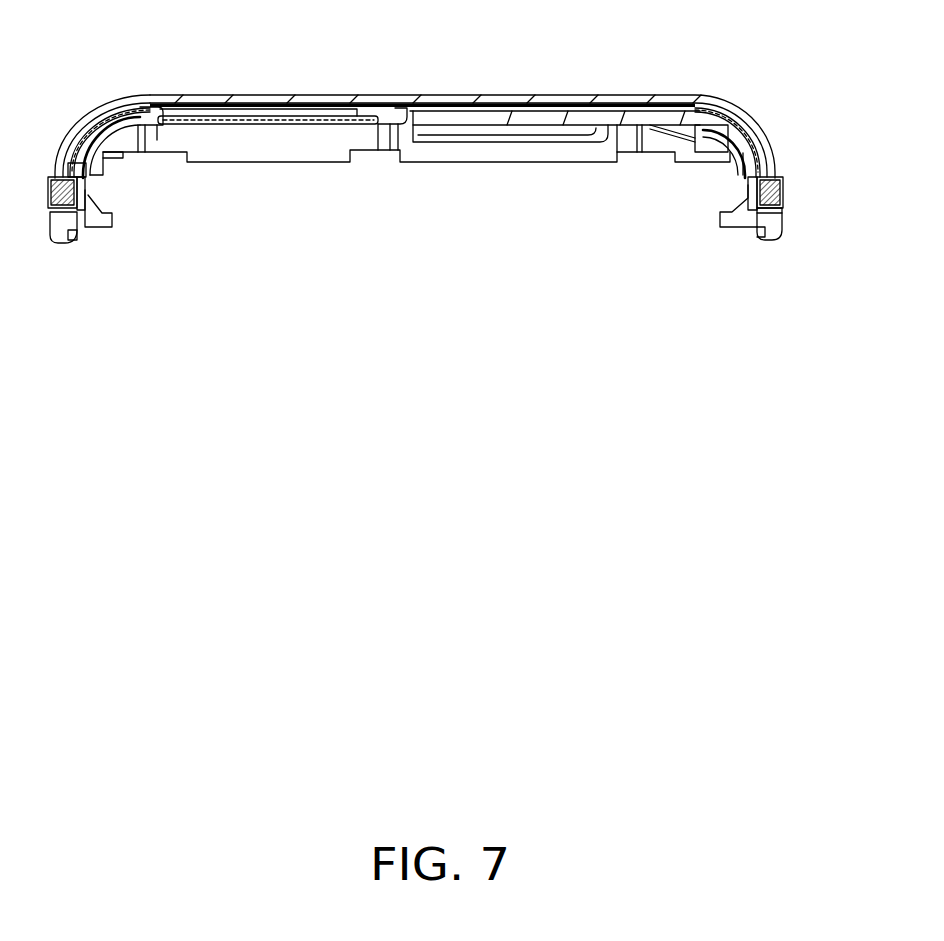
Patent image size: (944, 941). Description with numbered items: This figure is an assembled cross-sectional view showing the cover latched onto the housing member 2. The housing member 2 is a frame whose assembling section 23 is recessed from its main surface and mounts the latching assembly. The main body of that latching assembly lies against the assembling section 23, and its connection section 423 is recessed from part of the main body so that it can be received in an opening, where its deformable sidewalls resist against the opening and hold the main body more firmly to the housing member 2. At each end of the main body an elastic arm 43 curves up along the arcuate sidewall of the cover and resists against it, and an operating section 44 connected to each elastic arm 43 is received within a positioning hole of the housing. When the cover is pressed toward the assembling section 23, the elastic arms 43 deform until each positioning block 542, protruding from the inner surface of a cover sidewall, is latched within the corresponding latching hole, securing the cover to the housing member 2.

The housing member 2 is at (723, 107).
The elastic arm 43 is at (82, 137).
The assembling section 23 is at (107, 130).
The connection section 423 is at (290, 127).
The positioning block 542 is at (760, 168).
The operating section 44 is at (782, 193).